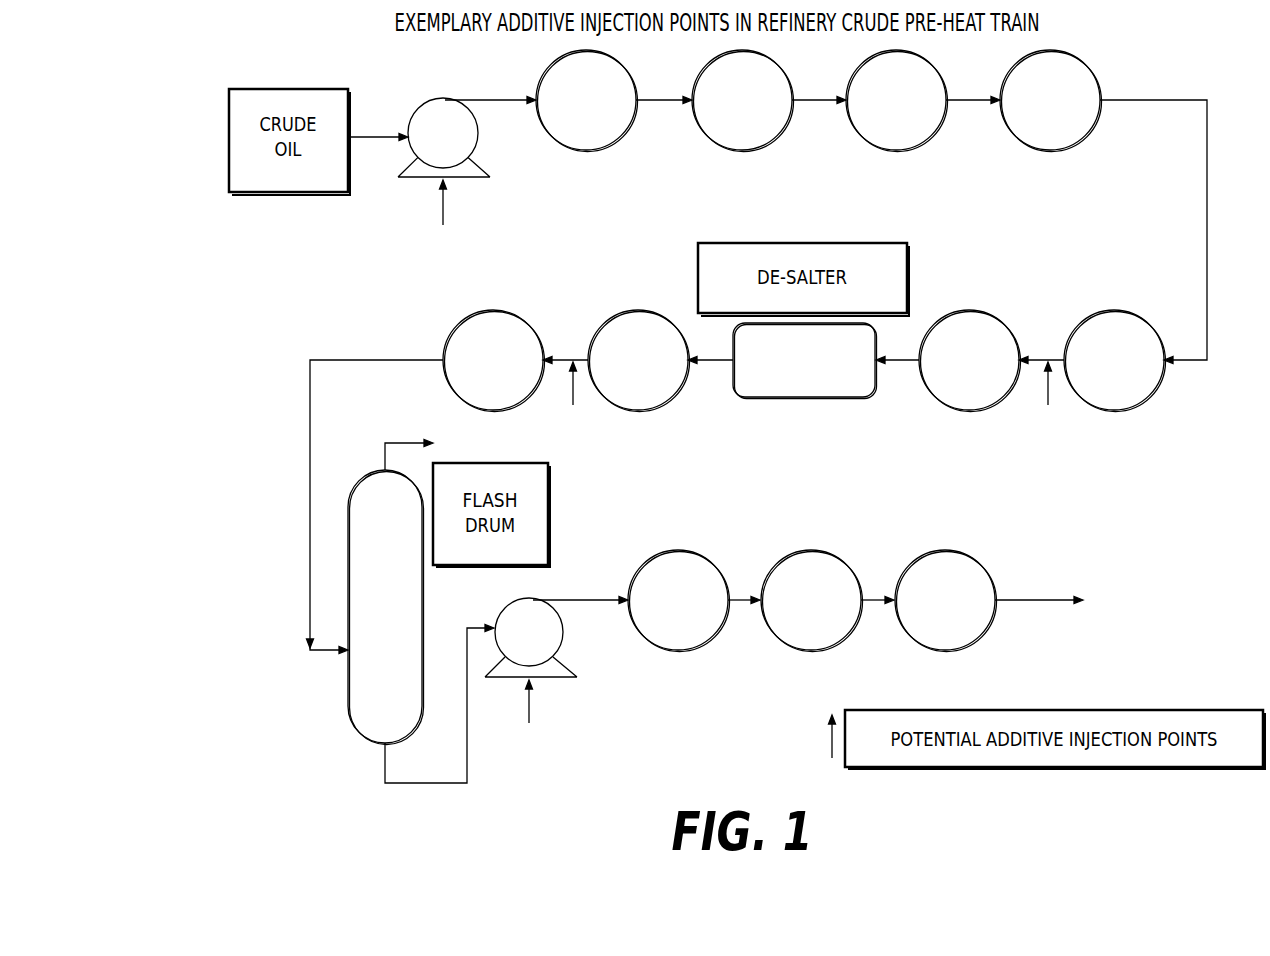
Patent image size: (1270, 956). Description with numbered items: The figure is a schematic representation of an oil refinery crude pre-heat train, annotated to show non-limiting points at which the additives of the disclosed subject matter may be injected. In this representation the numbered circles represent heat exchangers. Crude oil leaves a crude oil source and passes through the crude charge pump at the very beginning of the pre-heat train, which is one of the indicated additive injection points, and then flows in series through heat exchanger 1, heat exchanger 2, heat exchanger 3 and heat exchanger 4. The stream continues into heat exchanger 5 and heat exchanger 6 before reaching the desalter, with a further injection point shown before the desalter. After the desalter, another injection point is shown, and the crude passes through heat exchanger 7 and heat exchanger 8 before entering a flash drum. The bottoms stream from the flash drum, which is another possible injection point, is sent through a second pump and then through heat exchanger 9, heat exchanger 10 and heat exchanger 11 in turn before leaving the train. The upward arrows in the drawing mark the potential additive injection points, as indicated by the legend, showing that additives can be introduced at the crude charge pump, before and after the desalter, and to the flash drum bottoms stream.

The heat exchanger 1 is at (587, 101).
The heat exchanger 2 is at (743, 101).
The heat exchanger 3 is at (897, 101).
The heat exchanger 4 is at (1051, 101).
The heat exchanger 5 is at (1115, 361).
The heat exchanger 6 is at (970, 361).
The heat exchanger 7 is at (639, 361).
The heat exchanger 8 is at (494, 361).
The heat exchanger 9 is at (679, 601).
The heat exchanger 10 is at (812, 601).
The heat exchanger 11 is at (946, 601).